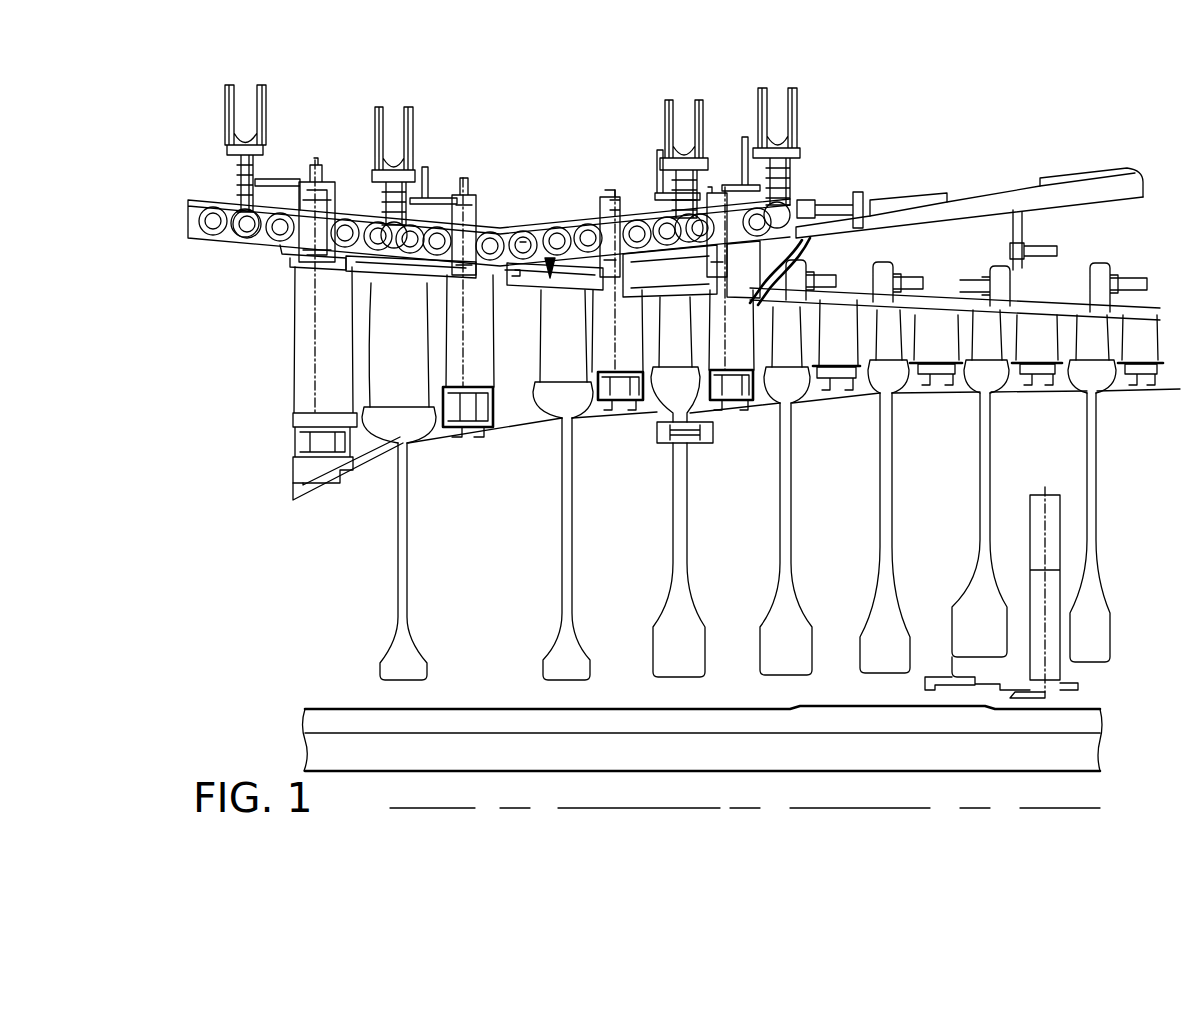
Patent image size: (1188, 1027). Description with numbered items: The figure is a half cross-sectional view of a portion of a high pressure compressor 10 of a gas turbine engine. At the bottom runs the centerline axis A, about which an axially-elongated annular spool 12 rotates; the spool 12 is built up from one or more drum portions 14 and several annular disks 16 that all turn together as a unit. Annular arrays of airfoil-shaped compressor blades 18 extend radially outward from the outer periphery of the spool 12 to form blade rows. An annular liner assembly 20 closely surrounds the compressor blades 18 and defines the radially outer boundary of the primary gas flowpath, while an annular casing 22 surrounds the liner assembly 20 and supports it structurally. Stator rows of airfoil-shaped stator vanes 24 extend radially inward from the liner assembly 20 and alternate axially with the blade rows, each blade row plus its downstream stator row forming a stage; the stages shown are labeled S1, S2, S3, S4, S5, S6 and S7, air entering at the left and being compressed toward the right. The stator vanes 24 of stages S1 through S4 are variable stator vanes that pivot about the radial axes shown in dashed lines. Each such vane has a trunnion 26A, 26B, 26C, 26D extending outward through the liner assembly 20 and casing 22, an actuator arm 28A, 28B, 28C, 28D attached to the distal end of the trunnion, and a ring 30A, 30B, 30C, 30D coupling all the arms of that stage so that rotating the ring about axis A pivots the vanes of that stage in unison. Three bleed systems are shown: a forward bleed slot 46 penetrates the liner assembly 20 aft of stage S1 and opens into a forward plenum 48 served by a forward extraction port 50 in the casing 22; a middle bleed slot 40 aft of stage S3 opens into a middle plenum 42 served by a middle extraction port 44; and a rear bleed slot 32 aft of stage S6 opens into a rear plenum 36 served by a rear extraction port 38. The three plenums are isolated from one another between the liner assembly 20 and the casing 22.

The high pressure compressor 10 is at (883, 142).
The spool 12 is at (731, 529).
The drum portion 14 is at (527, 432).
The annular disk 16 is at (545, 531).
The compressor blade 18 is at (416, 366).
The liner assembly 20 is at (268, 255).
The casing 22 is at (955, 223).
The stator vane 24 is at (337, 387).
The trunnion 26A is at (313, 180).
The trunnion 26B is at (462, 188).
The trunnion 26C is at (623, 163).
The trunnion 26D is at (745, 166).
The actuator arm 28A is at (283, 179).
The actuator arm 28B is at (427, 167).
The actuator arm 28C is at (660, 150).
The actuator arm 28D is at (747, 126).
The ring 30A is at (262, 92).
The ring 30B is at (413, 110).
The ring 30C is at (667, 104).
The ring 30D is at (760, 92).
The rear bleed slot 32 is at (1078, 304).
The rear plenum 36 is at (1119, 237).
The rear extraction port 38 is at (1100, 177).
The middle bleed slot 40 is at (760, 300).
The middle plenum 42 is at (937, 256).
The middle extraction port 44 is at (947, 194).
The forward bleed slot 46 is at (530, 272).
The forward plenum 48 is at (557, 228).
The forward extraction port 50 is at (531, 233).
The stage S1 is at (399, 543).
The stage S2 is at (522, 635).
The stage S3 is at (682, 522).
The stage S4 is at (786, 521).
The stage S5 is at (885, 516).
The stage S6 is at (980, 508).
The stage S7 is at (1092, 511).
The centerline axis A is at (467, 808).